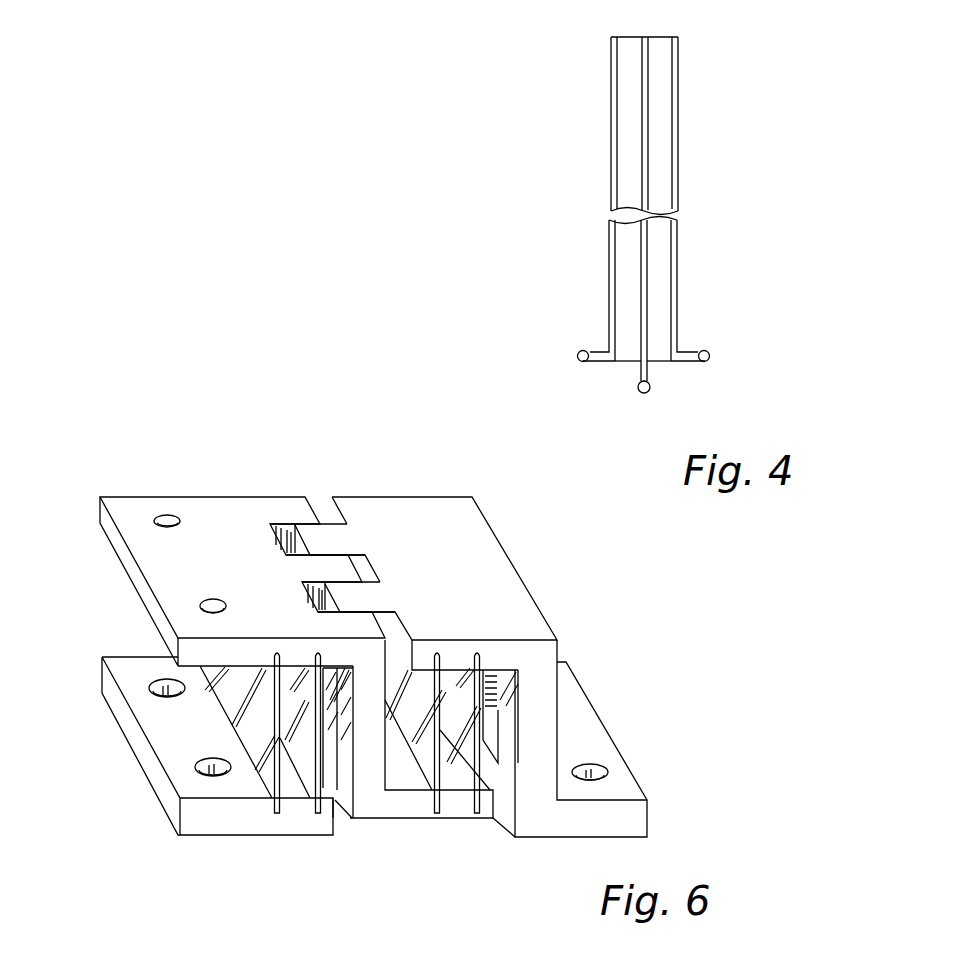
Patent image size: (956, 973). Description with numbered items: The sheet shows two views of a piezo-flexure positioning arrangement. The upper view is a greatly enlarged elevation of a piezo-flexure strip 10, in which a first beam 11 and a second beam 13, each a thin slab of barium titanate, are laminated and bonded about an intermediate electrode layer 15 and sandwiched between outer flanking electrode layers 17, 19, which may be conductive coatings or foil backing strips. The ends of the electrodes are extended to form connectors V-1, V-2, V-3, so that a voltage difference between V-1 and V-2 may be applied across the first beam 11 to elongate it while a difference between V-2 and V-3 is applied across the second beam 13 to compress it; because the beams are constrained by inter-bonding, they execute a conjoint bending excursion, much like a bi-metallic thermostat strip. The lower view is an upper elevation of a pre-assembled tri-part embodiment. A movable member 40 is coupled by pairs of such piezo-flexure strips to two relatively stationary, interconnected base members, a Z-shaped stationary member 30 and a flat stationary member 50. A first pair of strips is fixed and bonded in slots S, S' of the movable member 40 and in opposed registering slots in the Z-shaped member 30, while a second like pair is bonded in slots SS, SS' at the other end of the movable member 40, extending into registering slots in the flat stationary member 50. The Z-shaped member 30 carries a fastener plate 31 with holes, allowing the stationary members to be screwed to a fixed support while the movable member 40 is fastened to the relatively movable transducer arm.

In FIG. 4, the piezo-flexure strip 10 is at (538, 170).
In FIG. 4, the first beam 11 is at (627, 283).
In FIG. 4, the second beam 13 is at (657, 292).
In FIG. 4, the intermediate electrode layer 15 is at (652, 98).
In FIG. 4, the outer electrode layer 17 is at (680, 150).
In FIG. 4, the outer electrode layer 19 is at (612, 116).
In FIG. 4, the first voltage connector V-1 is at (554, 379).
In FIG. 4, the second voltage connector V-2 is at (643, 408).
In FIG. 4, the third voltage connector V-3 is at (732, 379).
In FIG. 6, the Z-shaped stationary member 30 is at (384, 491).
In FIG. 6, the fastener plate 31 is at (637, 782).
In FIG. 6, the movable member 40 is at (154, 492).
In FIG. 6, the flat stationary member 50 is at (128, 749).
In FIG. 6, the slot SS is at (248, 777).
In FIG. 6, the slot SS' is at (311, 769).
In FIG. 6, the slot S' is at (449, 769).
In FIG. 6, the slot S is at (492, 774).